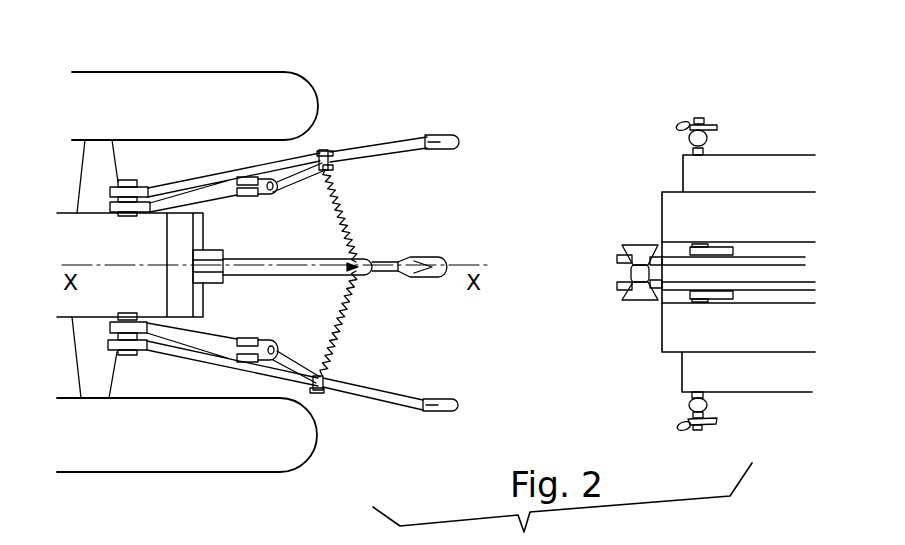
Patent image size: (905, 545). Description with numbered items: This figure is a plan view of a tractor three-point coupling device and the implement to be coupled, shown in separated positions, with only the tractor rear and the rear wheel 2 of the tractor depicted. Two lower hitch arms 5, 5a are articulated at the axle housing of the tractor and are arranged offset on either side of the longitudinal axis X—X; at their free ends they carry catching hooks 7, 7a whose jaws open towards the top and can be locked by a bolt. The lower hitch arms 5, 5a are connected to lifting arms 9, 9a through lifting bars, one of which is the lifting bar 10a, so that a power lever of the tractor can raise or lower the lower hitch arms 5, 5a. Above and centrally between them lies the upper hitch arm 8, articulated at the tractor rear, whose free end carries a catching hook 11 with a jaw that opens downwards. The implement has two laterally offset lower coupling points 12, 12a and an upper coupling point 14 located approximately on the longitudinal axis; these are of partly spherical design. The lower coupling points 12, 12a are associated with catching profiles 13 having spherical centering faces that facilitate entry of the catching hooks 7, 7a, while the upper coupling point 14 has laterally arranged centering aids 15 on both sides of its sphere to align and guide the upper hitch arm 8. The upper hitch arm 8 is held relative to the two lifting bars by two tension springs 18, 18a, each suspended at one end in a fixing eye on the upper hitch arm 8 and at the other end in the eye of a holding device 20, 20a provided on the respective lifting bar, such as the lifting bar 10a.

The rear wheel 2 is at (235, 87).
The lower hitch arm 5 is at (387, 147).
The lower hitch arm 5a is at (377, 396).
The catching hook 7 is at (447, 135).
The catching hook 7a is at (446, 411).
The upper hitch arm 8 is at (297, 259).
The lifting arm 9 is at (212, 197).
The lifting arm 9a is at (166, 340).
The lifting bar 10a is at (272, 338).
The catching hook 11 is at (437, 262).
The lower coupling point 12 is at (688, 139).
The lower coupling point 12a is at (690, 405).
The catching profile 13 is at (711, 126).
The upper coupling point 14 is at (630, 273).
The centering aid 15 is at (641, 247).
The tension spring 18 is at (343, 212).
The tension spring 18a is at (340, 328).
The holding device 20 is at (321, 150).
The holding device 20a is at (283, 362).